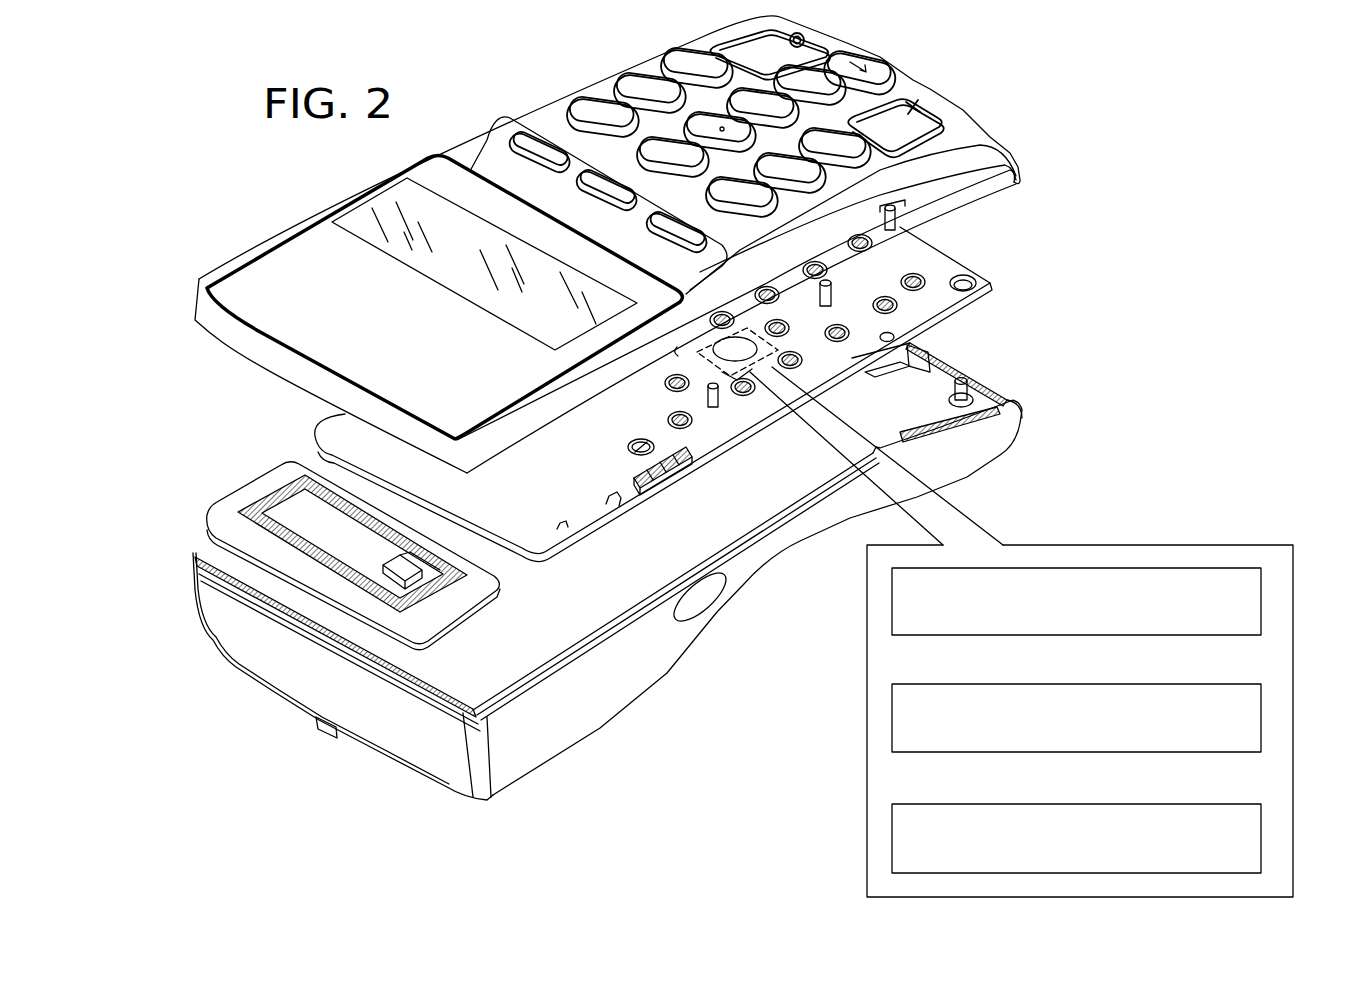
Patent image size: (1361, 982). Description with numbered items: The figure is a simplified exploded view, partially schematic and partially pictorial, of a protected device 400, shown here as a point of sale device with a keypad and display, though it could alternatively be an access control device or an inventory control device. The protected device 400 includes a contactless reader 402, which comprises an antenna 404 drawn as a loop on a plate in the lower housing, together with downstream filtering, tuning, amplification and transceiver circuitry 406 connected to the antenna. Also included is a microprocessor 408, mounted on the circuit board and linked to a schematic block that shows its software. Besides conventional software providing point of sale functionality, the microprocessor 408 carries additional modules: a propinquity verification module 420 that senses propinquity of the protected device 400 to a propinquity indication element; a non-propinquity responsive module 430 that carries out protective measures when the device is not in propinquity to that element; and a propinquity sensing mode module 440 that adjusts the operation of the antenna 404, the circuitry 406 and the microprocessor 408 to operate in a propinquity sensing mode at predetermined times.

The protected device 400 is at (187, 232).
The contactless reader 402 is at (298, 516).
The antenna 404 is at (290, 484).
The downstream filtering, tuning, amplification and transceiver circuitry 406 is at (455, 590).
The microprocessor 408 is at (790, 343).
The propinquity verification module 420 is at (1261, 603).
The non-propinquity responsive module 430 is at (1261, 723).
The propinquity sensing mode module 440 is at (1261, 843).